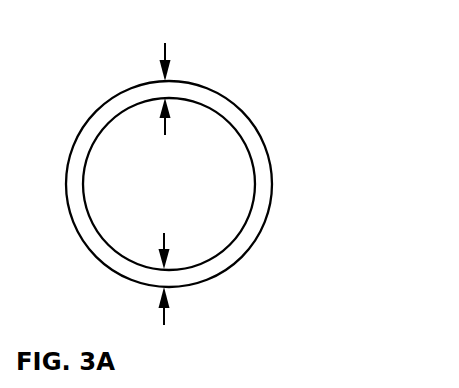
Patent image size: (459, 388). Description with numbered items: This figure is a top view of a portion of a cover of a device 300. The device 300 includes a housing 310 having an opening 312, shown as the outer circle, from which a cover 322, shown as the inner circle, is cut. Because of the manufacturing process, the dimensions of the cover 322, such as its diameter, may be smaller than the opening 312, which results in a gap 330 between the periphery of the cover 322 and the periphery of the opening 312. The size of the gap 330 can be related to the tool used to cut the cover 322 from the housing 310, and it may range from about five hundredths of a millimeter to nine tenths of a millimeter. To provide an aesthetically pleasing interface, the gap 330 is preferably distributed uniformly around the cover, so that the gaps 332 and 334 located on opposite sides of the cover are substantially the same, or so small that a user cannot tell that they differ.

The device 300 is at (202, 197).
The housing 310 is at (300, 213).
The opening 312 is at (82, 193).
The cover 322 is at (213, 230).
The gap 330 is at (196, 184).
The gap 332 is at (162, 68).
The gap 334 is at (167, 313).